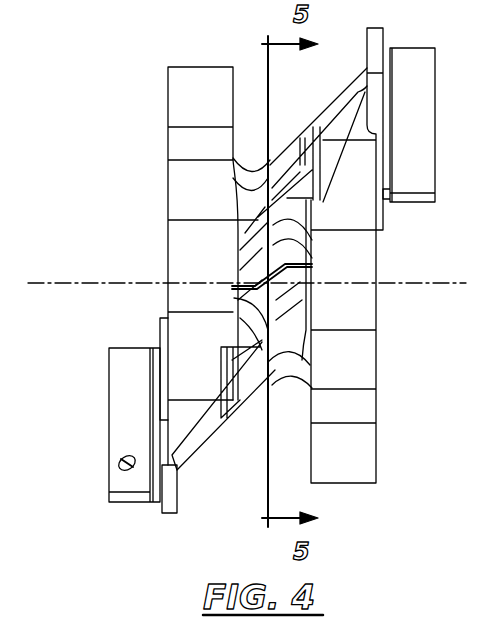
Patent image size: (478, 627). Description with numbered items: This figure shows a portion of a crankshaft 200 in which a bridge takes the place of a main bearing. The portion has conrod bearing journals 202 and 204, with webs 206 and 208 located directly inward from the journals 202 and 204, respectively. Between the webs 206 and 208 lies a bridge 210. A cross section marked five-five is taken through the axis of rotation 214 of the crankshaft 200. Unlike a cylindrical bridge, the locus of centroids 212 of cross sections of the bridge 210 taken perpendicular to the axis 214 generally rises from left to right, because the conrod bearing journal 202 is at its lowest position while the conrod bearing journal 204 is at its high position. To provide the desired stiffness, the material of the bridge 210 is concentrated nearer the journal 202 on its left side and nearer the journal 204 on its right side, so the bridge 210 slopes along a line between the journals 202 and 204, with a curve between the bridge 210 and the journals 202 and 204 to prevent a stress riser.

The crankshaft 200 is at (124, 186).
The conrod bearing journal 202 is at (124, 365).
The conrod bearing journal 204 is at (411, 182).
The web 206 is at (221, 203).
The web 208 is at (365, 217).
The bridge 210 is at (250, 390).
The locus of centroids 212 is at (300, 268).
The axis of rotation 214 is at (66, 280).